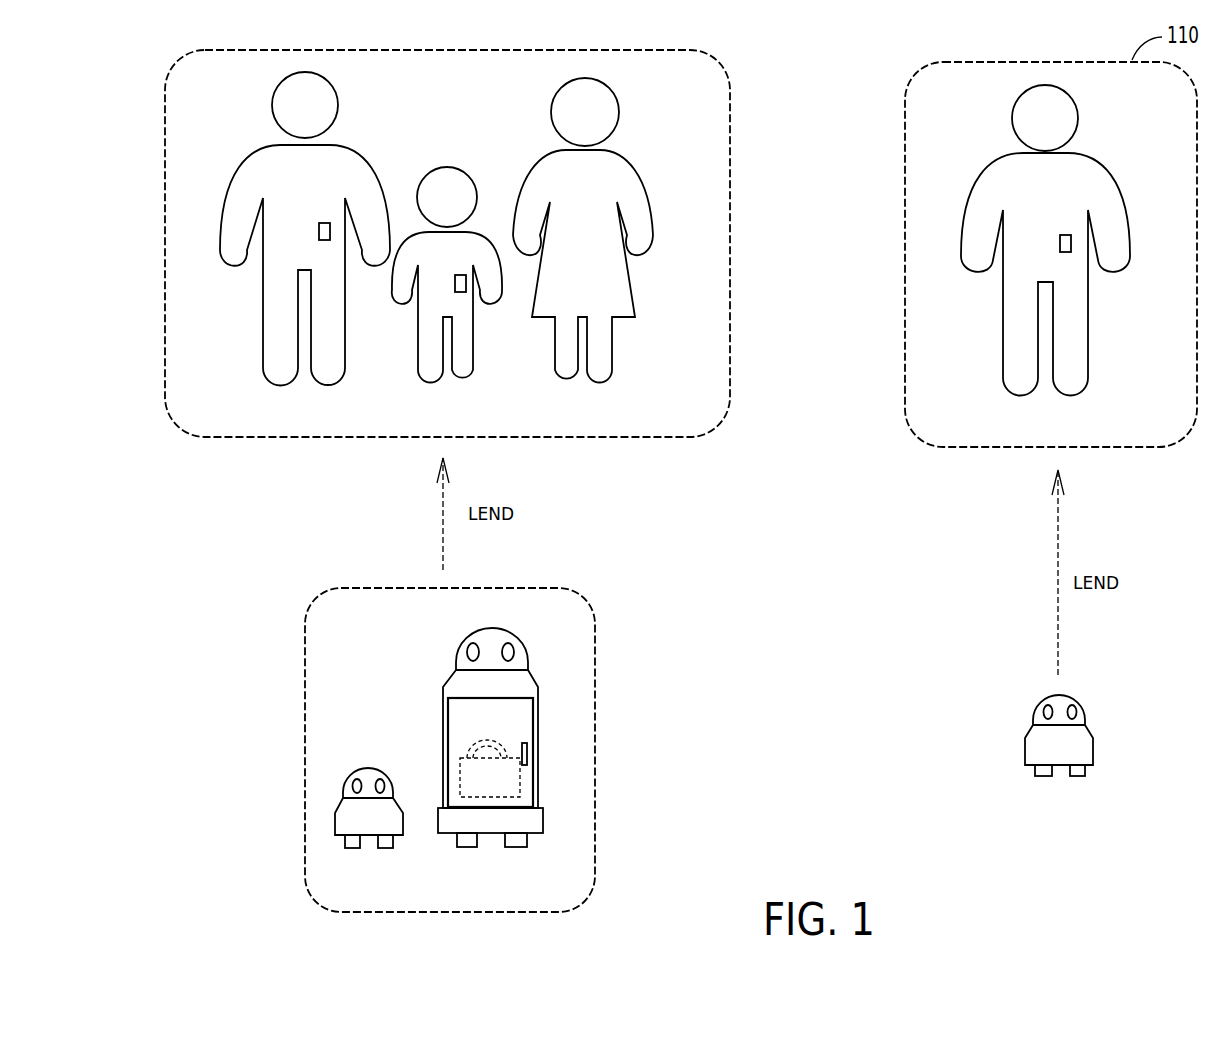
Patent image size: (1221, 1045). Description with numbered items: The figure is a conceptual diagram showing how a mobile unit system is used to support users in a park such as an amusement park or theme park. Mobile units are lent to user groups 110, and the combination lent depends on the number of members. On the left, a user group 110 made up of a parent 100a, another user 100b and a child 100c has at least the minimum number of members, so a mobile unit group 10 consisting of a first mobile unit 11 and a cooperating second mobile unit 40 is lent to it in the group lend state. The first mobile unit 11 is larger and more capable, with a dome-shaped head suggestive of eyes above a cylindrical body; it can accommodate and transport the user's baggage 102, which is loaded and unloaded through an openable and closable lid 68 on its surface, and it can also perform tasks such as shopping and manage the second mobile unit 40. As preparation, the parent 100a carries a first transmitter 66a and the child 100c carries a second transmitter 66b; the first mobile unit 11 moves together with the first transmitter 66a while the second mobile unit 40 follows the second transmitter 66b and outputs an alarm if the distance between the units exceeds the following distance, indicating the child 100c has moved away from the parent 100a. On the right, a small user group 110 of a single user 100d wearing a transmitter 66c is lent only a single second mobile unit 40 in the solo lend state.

The mobile unit group 10 is at (365, 588).
The first mobile unit 11 is at (530, 675).
The second mobile unit 40 is at (335, 810).
The first transmitter 66a is at (330, 234).
The second transmitter 66b is at (466, 284).
The transmitter 66c is at (1071, 243).
The lid 68 is at (534, 715).
The user (parent) 100a is at (338, 107).
The user 100b is at (619, 112).
The user (child) 100c is at (447, 166).
The user 100d is at (1103, 175).
The baggage 102 is at (519, 785).
The user group 110 is at (258, 50).